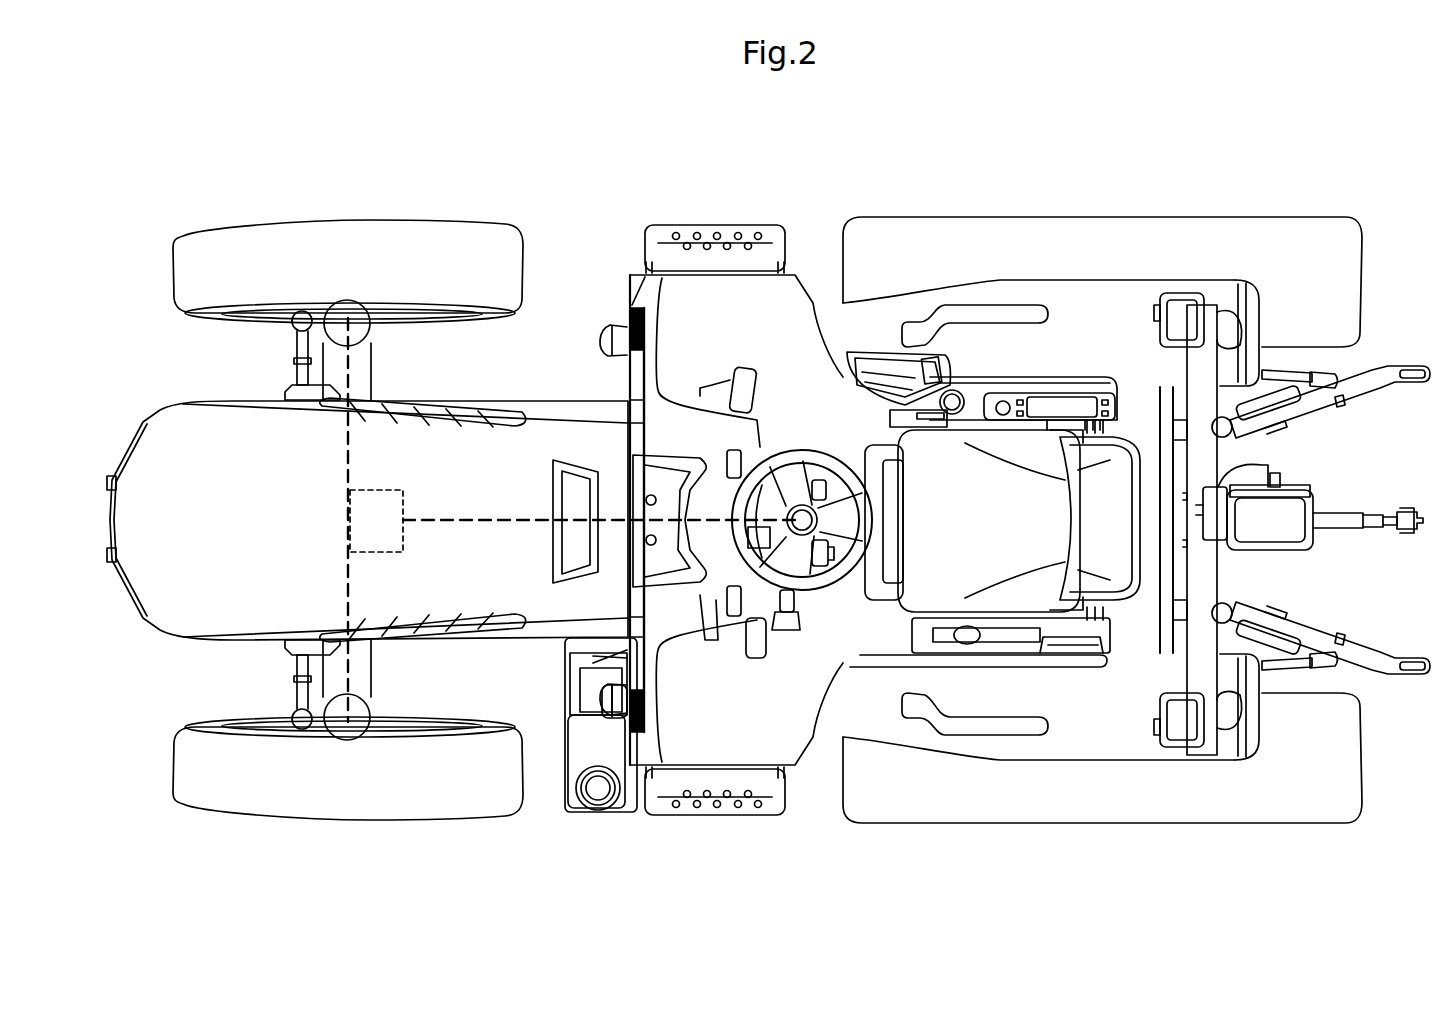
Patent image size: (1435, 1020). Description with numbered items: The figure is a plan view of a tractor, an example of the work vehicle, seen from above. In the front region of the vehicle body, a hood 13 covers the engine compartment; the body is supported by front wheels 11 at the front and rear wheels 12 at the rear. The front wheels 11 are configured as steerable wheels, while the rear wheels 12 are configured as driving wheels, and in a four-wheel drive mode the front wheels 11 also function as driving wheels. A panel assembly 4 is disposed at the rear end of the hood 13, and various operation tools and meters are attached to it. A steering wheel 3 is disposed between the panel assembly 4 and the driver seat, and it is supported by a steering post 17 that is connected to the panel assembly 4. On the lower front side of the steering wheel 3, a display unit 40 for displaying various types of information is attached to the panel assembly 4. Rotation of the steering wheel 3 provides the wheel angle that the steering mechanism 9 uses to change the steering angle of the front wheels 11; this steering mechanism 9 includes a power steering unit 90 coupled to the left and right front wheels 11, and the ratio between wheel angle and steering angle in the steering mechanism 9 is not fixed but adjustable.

The steering wheel 3 is at (805, 450).
The panel assembly 4 is at (679, 418).
The steering mechanism 9 is at (524, 505).
The power steering unit 90 is at (392, 487).
The front wheels 11 is at (363, 232).
The rear wheels 12 is at (1073, 232).
The hood 13 is at (178, 440).
The steering post 17 is at (802, 562).
The display unit 40 is at (757, 535).